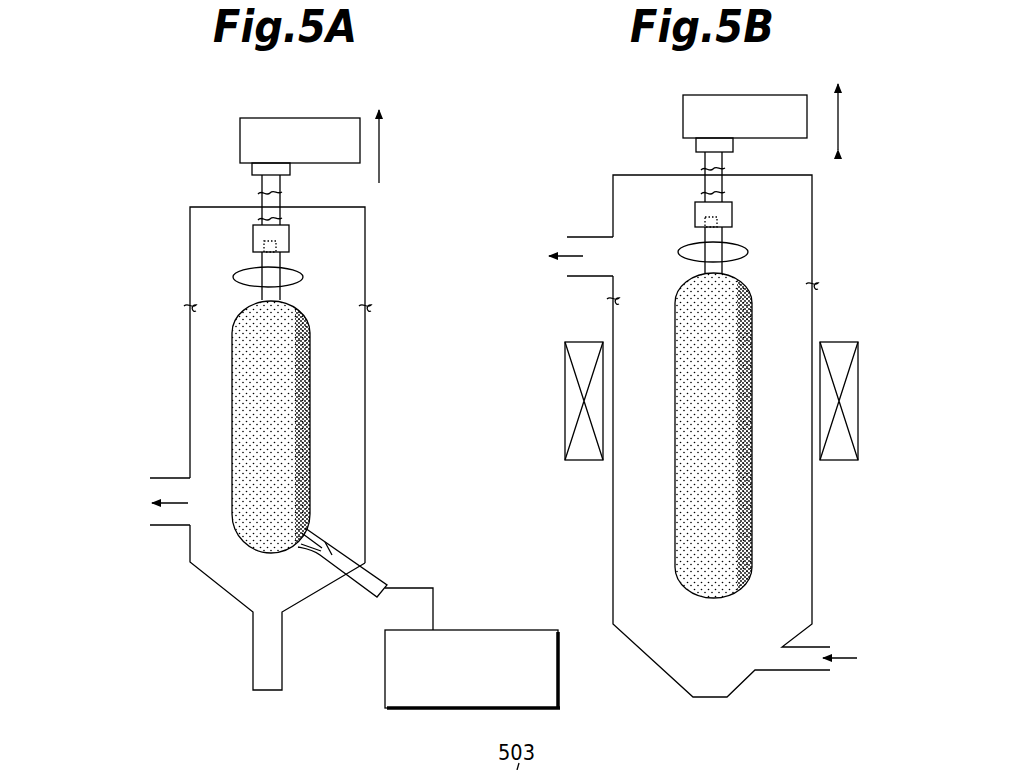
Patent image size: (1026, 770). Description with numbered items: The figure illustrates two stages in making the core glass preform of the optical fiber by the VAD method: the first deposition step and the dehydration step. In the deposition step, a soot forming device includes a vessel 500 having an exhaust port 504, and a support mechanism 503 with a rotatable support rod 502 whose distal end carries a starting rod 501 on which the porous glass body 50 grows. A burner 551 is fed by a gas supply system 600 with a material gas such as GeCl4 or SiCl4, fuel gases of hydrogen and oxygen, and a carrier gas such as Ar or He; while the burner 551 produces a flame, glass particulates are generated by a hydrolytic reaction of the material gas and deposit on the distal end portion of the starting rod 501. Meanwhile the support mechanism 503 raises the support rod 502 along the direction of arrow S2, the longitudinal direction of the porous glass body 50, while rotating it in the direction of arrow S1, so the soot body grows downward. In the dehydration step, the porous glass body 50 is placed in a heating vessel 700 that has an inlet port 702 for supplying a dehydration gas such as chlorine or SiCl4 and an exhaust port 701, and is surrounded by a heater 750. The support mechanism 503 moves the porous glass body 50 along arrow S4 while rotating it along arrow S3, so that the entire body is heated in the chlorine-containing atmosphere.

In FIG. 5A, the porous glass body 50 is at (314, 414).
In FIG. 5B, the porous glass body 50 is at (757, 487).
In FIG. 5A, the vessel 500 is at (190, 280).
In FIG. 5A, the starting rod 501 is at (264, 262).
In FIG. 5A, the support rod 502 is at (262, 186).
In FIG. 5A, the support mechanism 503 is at (250, 140).
In FIG. 5B, the support mechanism 503 is at (695, 117).
In FIG. 5A, the exhaust port 504 is at (173, 490).
In FIG. 5A, the burner 551 is at (372, 580).
In FIG. 5A, the gas supply system 600 is at (491, 630).
In FIG. 5B, the heating vessel 700 is at (812, 237).
In FIG. 5B, the exhaust port 701 is at (587, 243).
In FIG. 5B, the inlet port 702 is at (788, 662).
In FIG. 5B, the heater 750 is at (583, 342).
In FIG. 5A, the rotation direction of support rod S1 is at (296, 267).
In FIG. 5A, the raising direction of support rod S2 is at (382, 160).
In FIG. 5B, the rotation direction during dehydration S3 is at (738, 245).
In FIG. 5B, the movement direction during dehydration S4 is at (841, 128).